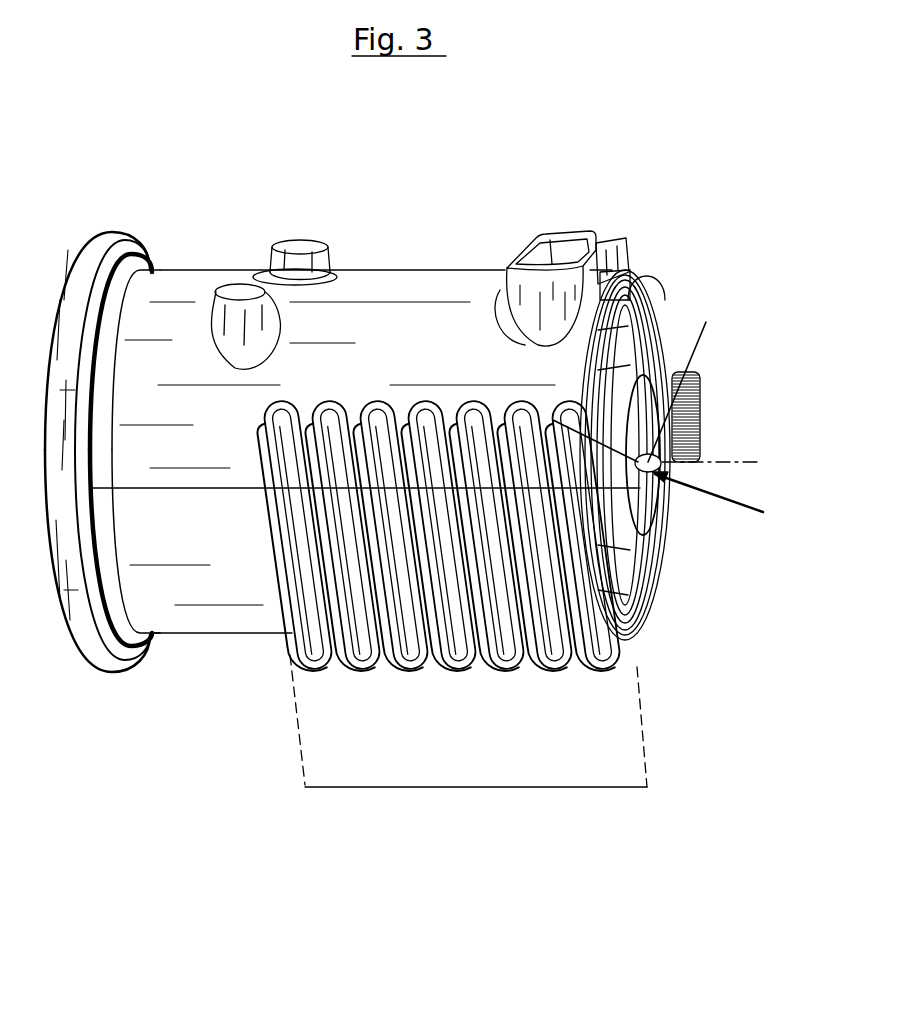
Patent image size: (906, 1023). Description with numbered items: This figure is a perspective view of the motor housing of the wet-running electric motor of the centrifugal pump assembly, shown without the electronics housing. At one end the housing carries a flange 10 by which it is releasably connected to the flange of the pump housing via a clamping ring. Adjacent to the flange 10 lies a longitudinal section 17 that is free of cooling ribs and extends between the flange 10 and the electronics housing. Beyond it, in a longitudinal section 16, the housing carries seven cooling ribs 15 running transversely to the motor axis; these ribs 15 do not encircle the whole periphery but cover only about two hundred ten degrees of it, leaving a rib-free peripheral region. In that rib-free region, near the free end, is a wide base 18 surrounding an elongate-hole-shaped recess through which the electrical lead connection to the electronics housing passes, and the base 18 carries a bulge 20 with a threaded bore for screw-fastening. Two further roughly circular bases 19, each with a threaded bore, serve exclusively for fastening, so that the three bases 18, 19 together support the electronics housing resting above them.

The flange 10 is at (108, 670).
The cooling ribs 15 is at (430, 667).
The longitudinal section 16 is at (510, 787).
The longitudinal section 17 is at (258, 523).
The base 18 is at (587, 232).
The bases 19 is at (255, 273).
The bulge 20 is at (628, 257).